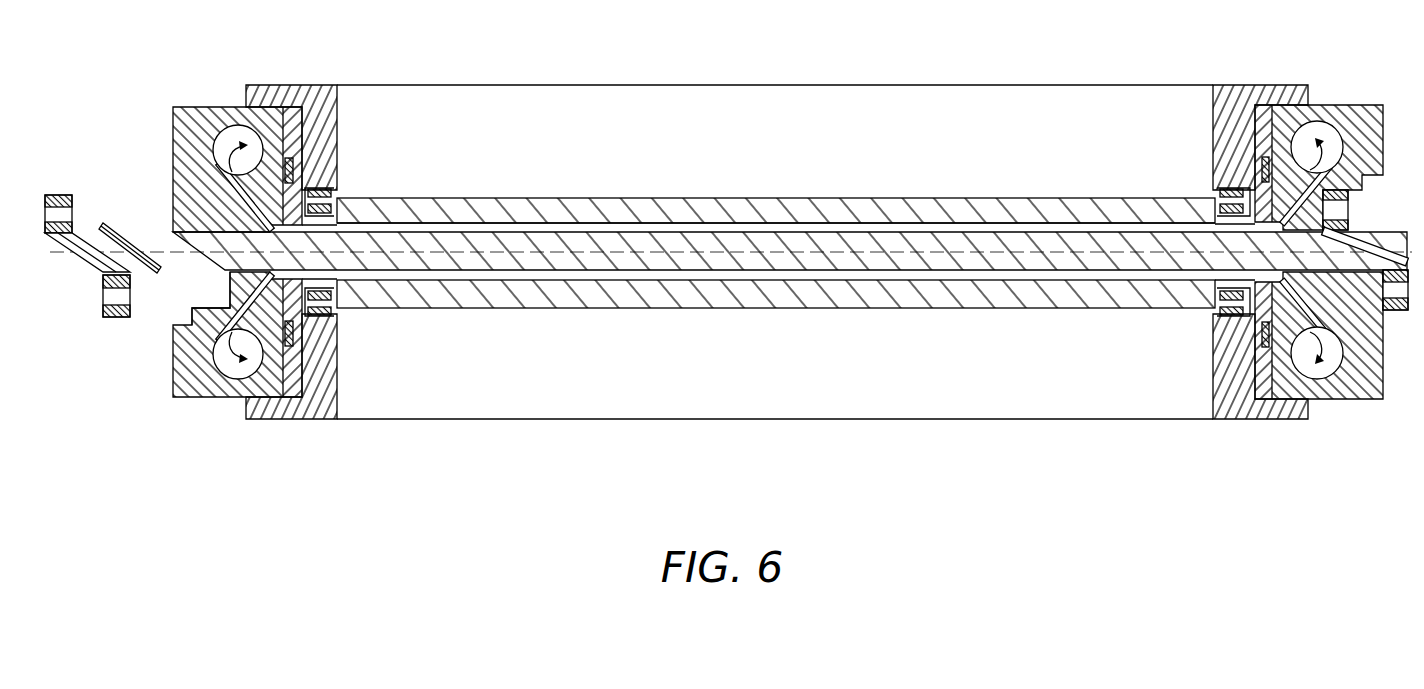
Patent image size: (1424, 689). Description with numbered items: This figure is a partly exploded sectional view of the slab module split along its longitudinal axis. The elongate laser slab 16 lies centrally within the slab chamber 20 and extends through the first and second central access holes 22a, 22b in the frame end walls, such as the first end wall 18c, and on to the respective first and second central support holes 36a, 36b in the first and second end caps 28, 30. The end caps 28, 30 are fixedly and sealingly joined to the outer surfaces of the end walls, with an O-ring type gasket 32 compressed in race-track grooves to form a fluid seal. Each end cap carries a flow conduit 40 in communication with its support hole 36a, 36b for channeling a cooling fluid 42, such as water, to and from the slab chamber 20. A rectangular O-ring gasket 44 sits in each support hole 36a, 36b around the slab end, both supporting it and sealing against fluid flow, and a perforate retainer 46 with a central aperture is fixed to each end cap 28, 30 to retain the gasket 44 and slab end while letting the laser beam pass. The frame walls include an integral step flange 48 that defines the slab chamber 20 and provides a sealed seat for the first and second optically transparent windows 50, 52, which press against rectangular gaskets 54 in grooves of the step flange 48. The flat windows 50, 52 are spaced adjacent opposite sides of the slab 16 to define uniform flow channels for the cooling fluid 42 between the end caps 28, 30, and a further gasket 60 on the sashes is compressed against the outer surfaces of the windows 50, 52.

The laser slab 16 is at (718, 240).
The first end wall 18c is at (1248, 84).
The slab chamber 20 is at (858, 224).
The first central access hole 22a is at (1222, 208).
The second central access hole 22b is at (340, 222).
The first end cap 28 is at (1387, 100).
The second end cap 30 is at (170, 177).
The O-ring type gasket 32 is at (300, 165).
The first central support hole 36a is at (1350, 210).
The second central support hole 36b is at (232, 270).
The flow conduit 40 is at (1318, 121).
The cooling fluid 42 is at (1333, 122).
The gasket 44 is at (138, 248).
The perforate retainer 46 is at (75, 255).
The step flange 48 is at (1140, 235).
The first optically transparent window 50 is at (1030, 198).
The second optically transparent window 52 is at (1030, 308).
The gasket 54 is at (1220, 300).
The gasket 60 is at (1215, 330).